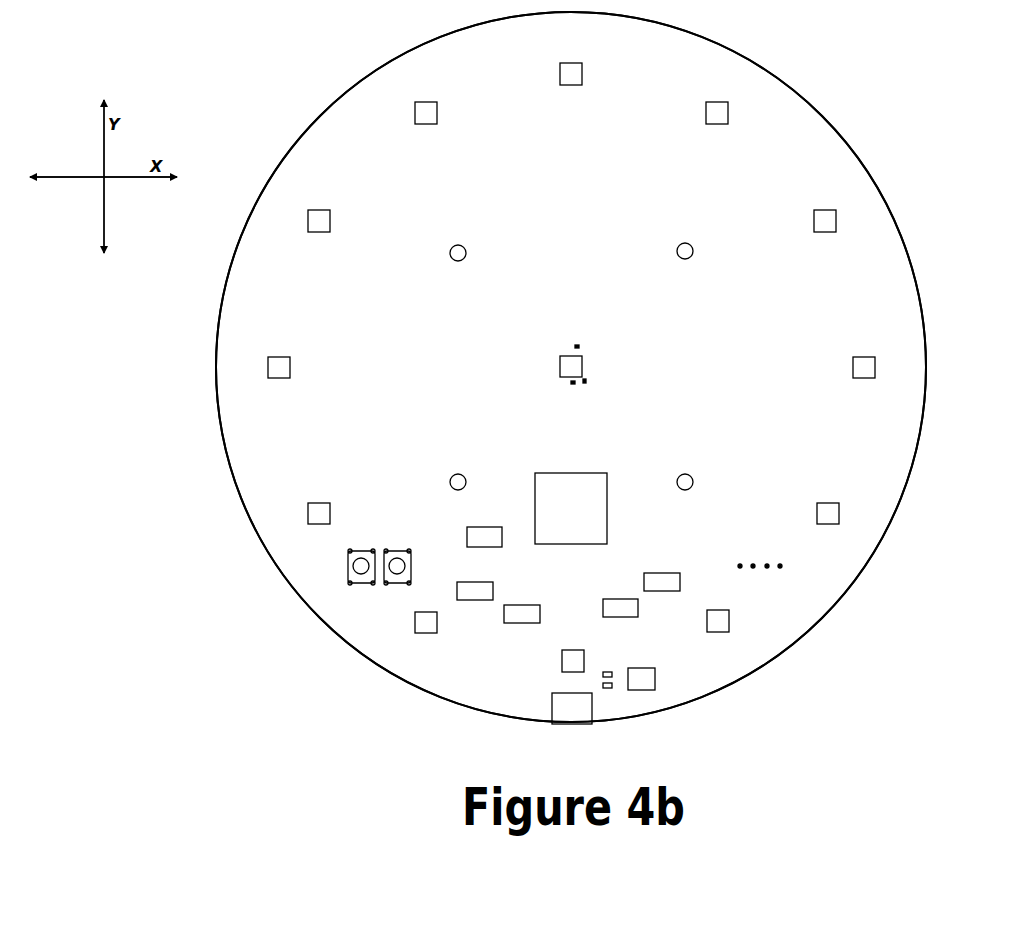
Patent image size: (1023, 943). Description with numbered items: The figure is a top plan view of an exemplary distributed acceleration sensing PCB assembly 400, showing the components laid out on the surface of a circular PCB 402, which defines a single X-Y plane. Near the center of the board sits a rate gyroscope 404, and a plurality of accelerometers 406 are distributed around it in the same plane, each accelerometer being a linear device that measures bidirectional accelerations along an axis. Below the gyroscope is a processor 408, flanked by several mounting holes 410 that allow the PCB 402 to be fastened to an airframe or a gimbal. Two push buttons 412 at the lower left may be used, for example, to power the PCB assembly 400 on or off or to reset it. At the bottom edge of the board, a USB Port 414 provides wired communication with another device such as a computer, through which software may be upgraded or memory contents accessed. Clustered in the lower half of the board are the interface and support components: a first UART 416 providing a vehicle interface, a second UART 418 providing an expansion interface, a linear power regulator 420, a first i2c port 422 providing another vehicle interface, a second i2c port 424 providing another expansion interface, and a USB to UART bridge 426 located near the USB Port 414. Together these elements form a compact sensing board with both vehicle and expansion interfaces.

The distributed acceleration sensing PCB assembly 400 is at (977, 60).
The PCB 402 is at (307, 126).
The rate gyroscope 404 is at (557, 365).
The accelerometers 406 is at (426, 127).
The processor 408 is at (571, 471).
The mounting holes 410 is at (463, 245).
The push buttons 412 is at (394, 547).
The USB Port 414 is at (572, 727).
The first UART 416 is at (500, 572).
The second UART 418 is at (538, 594).
The linear power regulator 420 is at (492, 515).
The first i2c port 422 is at (625, 583).
The second i2c port 424 is at (672, 560).
The USB to UART bridge 426 is at (657, 688).